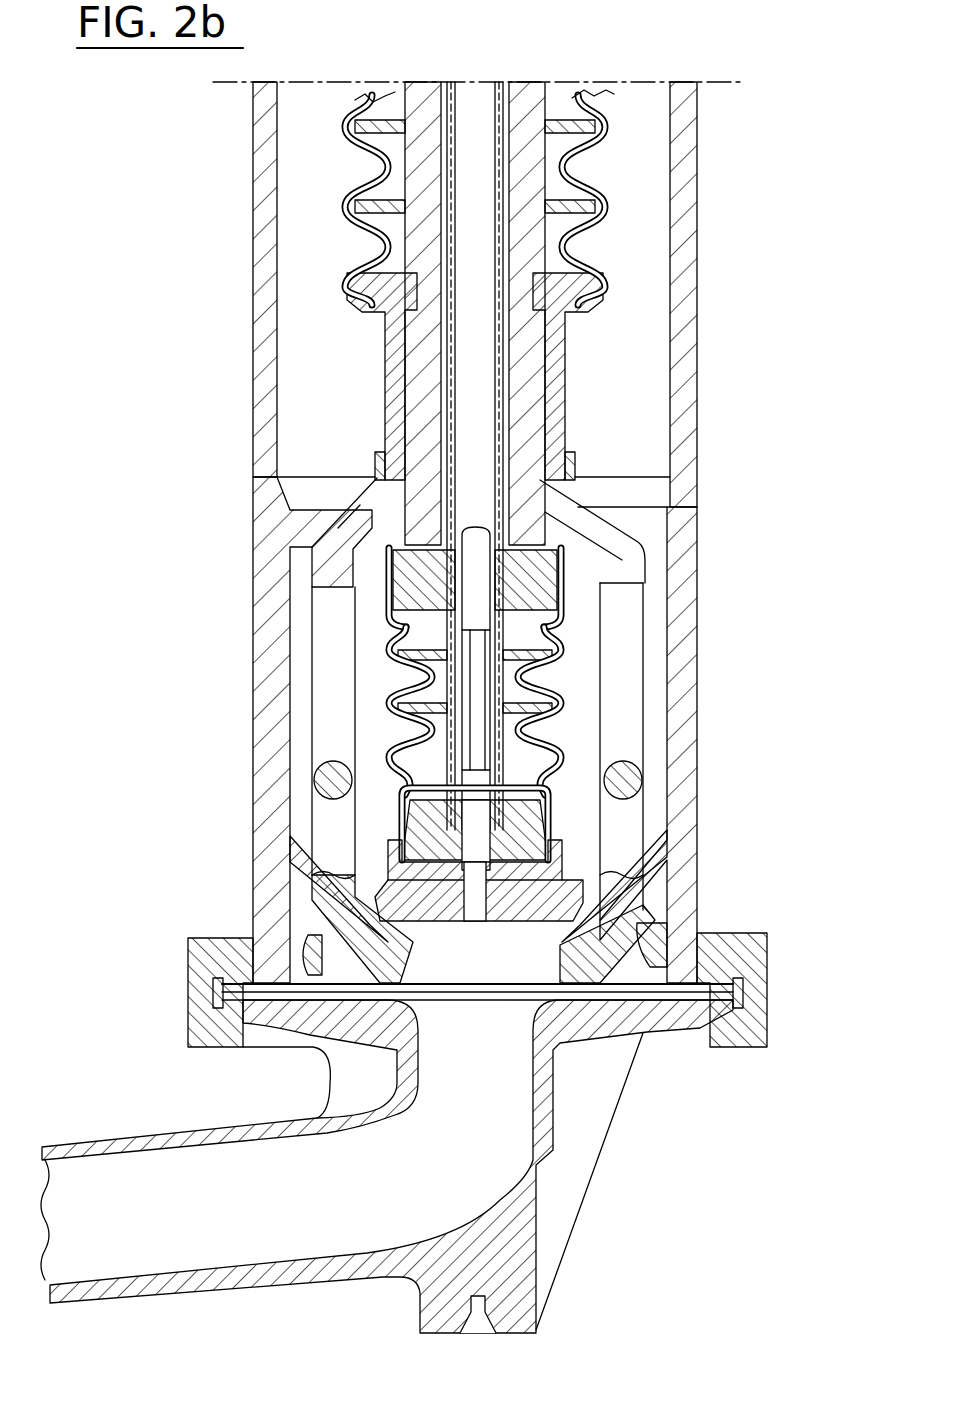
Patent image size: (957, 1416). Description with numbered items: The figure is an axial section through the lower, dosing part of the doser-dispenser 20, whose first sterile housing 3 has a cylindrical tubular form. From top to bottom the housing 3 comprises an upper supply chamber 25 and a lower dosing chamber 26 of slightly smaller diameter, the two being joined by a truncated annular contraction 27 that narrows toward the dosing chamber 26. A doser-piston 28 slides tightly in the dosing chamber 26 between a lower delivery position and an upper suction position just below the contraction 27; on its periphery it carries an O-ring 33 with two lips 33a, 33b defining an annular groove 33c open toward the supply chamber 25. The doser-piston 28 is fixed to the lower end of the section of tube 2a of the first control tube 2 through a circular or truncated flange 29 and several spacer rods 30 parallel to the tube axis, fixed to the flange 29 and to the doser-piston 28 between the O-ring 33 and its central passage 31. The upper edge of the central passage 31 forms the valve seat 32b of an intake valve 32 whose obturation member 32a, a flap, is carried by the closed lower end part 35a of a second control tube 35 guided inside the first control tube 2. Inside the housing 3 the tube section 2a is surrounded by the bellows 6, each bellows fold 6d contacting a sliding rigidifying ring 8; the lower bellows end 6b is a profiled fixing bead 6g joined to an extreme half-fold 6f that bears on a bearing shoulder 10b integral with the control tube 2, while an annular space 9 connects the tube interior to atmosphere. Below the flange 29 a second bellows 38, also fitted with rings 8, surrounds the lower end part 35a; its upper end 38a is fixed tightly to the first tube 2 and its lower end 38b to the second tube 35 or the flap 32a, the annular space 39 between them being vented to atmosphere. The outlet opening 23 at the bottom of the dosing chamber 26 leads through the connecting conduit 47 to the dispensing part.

The sterile housing 3 is at (250, 243).
The bellows 6 is at (598, 180).
The lower bellows end 6b is at (383, 433).
The bellows fold 6d is at (350, 233).
The annular half-fold 6f is at (618, 273).
The fixing bead 6g is at (560, 441).
The rigidifying ring 8 is at (592, 130).
The annular space 9 is at (606, 236).
The bearing shoulder 10b is at (572, 305).
The control tube 2 is at (445, 313).
The section of tube 2a is at (420, 348).
The doser-dispenser 20 is at (238, 742).
The outlet opening 23 is at (457, 1003).
The supply chamber 25 is at (640, 270).
The dosing chamber 26 is at (655, 617).
The truncated annular contraction 27 is at (300, 492).
The doser-piston 28 is at (322, 911).
The flange 29 is at (605, 535).
The spacer rods 30 is at (325, 632).
The central passage 31 is at (448, 965).
The intake valve 32 is at (590, 900).
The obturation member 32a is at (600, 880).
The valve seat 32b is at (628, 926).
The O-ring 33 is at (245, 963).
The lip 33a is at (650, 907).
The lip 33b is at (687, 930).
The annular groove 33c is at (637, 947).
The second control tube 35 is at (440, 386).
The lower end part 35a is at (445, 723).
The second bellows 38 is at (562, 700).
The upper end of second bellows 38a is at (568, 579).
The lower end of second bellows 38b is at (572, 812).
The annular space 39 is at (430, 680).
The connecting conduit 47 is at (131, 1137).